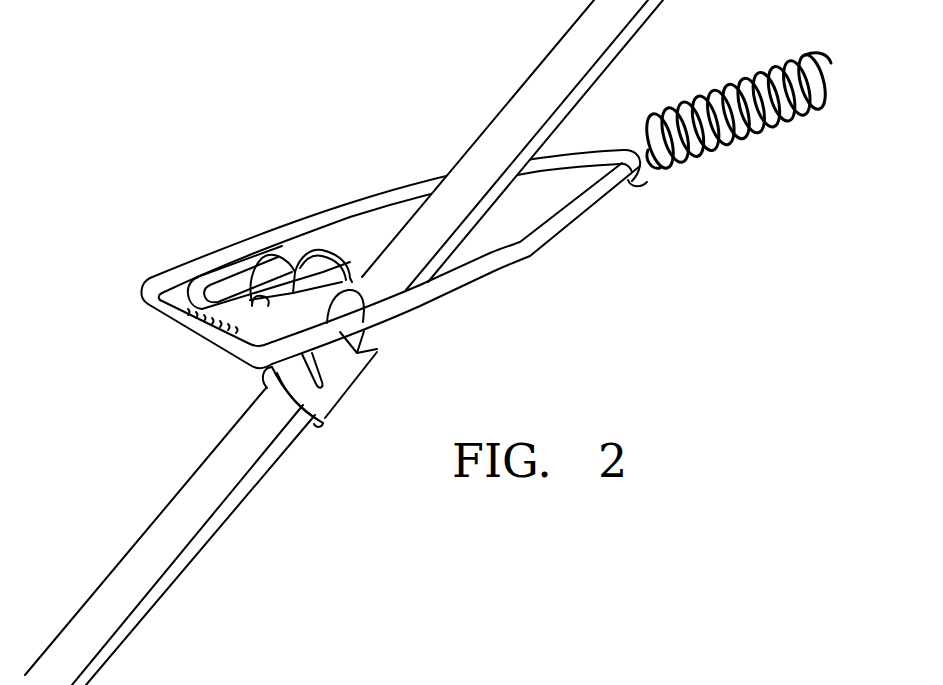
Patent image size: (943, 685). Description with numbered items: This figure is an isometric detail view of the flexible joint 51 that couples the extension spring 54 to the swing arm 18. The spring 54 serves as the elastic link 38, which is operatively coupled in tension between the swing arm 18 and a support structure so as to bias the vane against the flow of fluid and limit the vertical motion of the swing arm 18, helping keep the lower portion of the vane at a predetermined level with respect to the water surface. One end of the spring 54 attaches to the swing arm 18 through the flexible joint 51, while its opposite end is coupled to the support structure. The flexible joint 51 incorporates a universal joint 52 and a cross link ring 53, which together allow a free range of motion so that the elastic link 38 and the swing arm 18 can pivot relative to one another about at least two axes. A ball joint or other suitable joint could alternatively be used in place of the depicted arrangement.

The flexible joint 51 is at (178, 121).
The elastic link 38 is at (689, 226).
The cross link ring 53 is at (330, 214).
The universal joint 52 is at (216, 276).
The swing arm 18 is at (191, 551).
The extension spring 54 is at (738, 142).